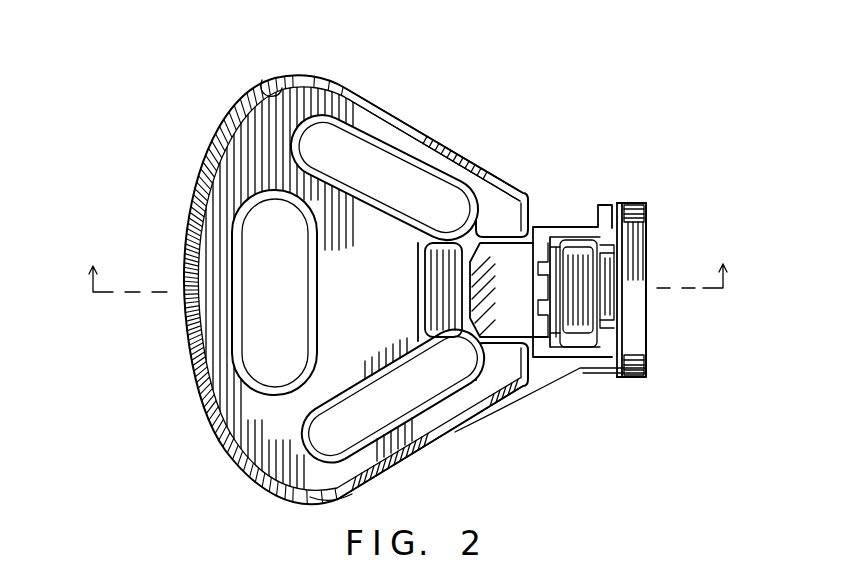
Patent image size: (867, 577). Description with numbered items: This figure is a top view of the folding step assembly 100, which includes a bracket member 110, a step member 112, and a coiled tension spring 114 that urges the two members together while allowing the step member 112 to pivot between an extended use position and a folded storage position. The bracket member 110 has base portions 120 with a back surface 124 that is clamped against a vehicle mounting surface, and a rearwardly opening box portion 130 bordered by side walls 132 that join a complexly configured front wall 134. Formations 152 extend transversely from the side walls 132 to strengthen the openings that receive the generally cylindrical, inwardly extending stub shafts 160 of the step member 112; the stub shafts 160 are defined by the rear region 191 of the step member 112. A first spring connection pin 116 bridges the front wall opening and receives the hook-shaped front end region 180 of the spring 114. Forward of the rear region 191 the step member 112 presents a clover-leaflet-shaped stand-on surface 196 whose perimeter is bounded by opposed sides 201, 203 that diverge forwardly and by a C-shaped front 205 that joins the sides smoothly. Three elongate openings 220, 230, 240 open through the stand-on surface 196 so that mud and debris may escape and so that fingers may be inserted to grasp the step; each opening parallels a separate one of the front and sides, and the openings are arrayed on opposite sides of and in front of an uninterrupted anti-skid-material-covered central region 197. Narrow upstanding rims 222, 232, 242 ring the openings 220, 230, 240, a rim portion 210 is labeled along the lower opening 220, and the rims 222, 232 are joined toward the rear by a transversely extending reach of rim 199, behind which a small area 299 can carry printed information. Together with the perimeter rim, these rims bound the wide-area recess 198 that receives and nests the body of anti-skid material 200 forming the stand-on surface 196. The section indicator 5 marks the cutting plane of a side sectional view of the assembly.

The folding step assembly 100 is at (598, 100).
The bracket member 110 is at (652, 225).
The step member 112 is at (432, 126).
The coiled tension spring 114 is at (542, 302).
The first spring connection pin 116 is at (540, 280).
The base portions 120 is at (634, 203).
The back surface 124 is at (645, 258).
The rearwardly opening box portion 130 is at (585, 203).
The side walls 132 is at (607, 228).
The front wall 134 is at (560, 237).
The formations 152 is at (555, 227).
The stub shafts 160 is at (617, 321).
The hook-shaped front end region 180 is at (543, 290).
The rear region 191 is at (602, 200).
The clover-leaflet-shaped stand-on surface 196 is at (186, 357).
The central region 197 is at (360, 255).
The wide-area recess 198 is at (262, 84).
The reach of rim 199 is at (417, 291).
The body of anti-skid material 200 is at (200, 150).
The side 201 is at (384, 465).
The side 203 is at (386, 110).
The C-shaped front 205 is at (180, 318).
The lower slot wall 210 is at (455, 433).
The elongate opening 220 is at (345, 498).
The rim 222 is at (360, 425).
The elongate opening 230 is at (340, 94).
The rim 232 is at (352, 140).
The elongate opening 240 is at (270, 217).
The rim 242 is at (248, 320).
The small area 299 is at (445, 252).
The section line 5- 5 is at (407, 272).